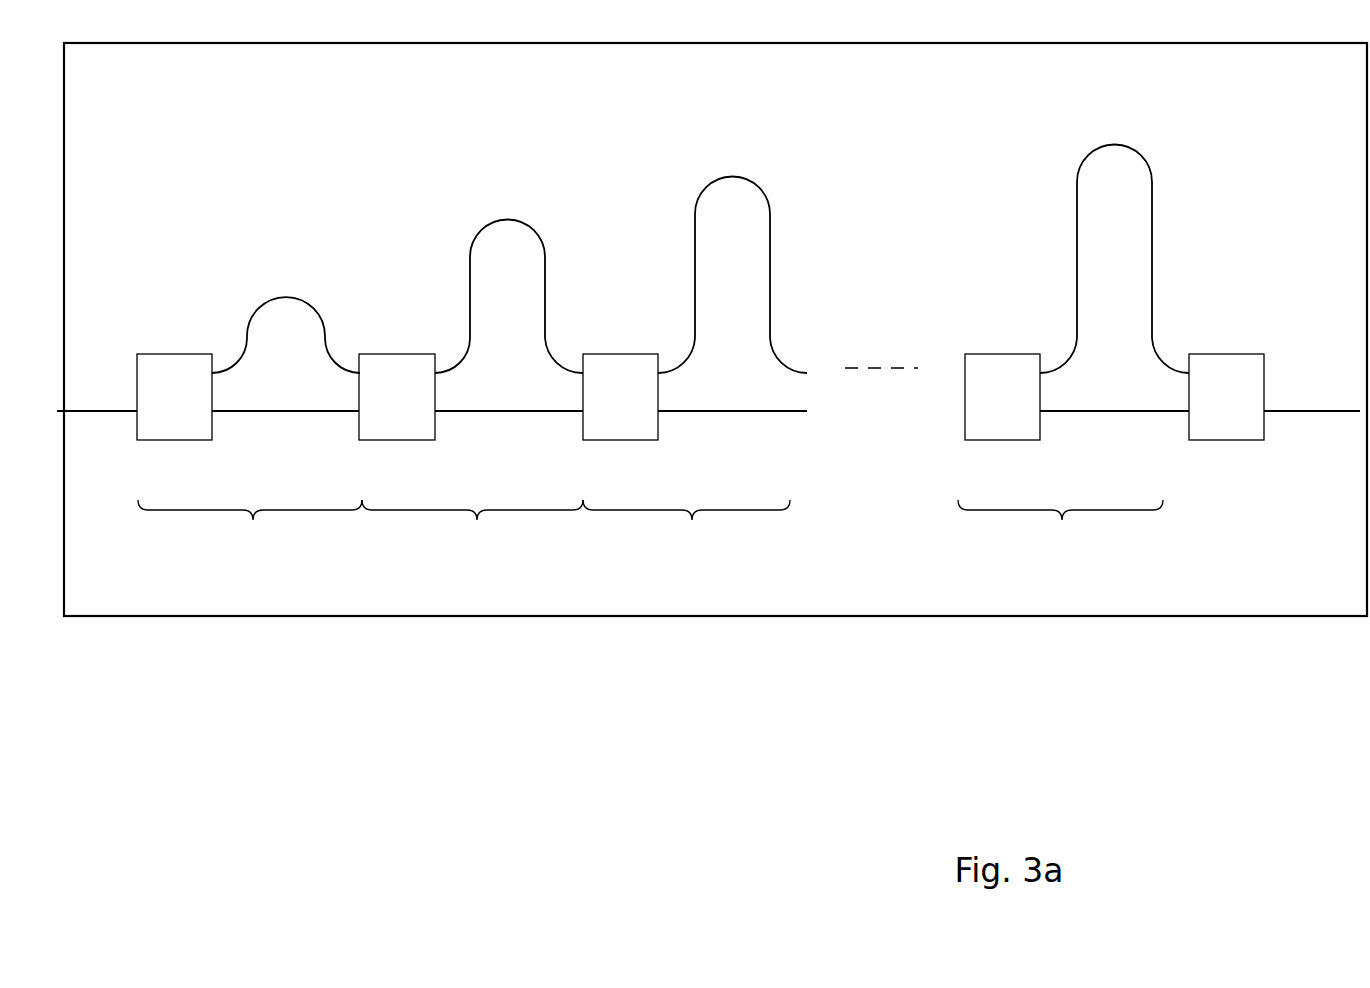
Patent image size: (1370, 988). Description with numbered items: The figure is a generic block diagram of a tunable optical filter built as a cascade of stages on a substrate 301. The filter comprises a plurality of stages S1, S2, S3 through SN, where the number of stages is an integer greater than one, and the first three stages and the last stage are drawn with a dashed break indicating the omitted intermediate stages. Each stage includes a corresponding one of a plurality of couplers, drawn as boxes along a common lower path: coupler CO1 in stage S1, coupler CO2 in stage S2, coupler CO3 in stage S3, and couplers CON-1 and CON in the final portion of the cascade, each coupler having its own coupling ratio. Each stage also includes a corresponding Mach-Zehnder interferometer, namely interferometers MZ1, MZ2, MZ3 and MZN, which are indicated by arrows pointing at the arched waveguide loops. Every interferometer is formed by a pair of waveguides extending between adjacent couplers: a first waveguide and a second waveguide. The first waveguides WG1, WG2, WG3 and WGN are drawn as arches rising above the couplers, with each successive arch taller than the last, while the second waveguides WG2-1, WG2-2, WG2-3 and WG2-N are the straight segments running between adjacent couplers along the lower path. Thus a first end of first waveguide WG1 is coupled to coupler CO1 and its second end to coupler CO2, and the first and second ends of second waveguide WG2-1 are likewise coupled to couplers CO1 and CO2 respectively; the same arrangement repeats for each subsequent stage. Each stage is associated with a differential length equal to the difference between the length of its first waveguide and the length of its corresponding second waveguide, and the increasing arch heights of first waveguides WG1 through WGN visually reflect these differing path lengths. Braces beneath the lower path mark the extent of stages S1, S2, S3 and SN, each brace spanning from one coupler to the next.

The substrate 301 is at (1220, 616).
The first coupler CO1 is at (173, 354).
The second coupler CO2 is at (397, 354).
The third coupler CO3 is at (619, 354).
The (N-1)th coupler CON-1 is at (990, 354).
The Nth coupler CON is at (1227, 354).
The first waveguide of first stage WG1 is at (247, 335).
The first waveguide of second stage WG2 is at (508, 220).
The first waveguide of third stage WG3 is at (768, 225).
The first waveguide of Nth stage WGN is at (1087, 157).
The second waveguide of first stage WG2-1 is at (252, 413).
The second waveguide of second stage WG2-2 is at (475, 413).
The second waveguide of third stage WG2-3 is at (700, 413).
The second waveguide of Nth stage WG2-N is at (1070, 413).
The first Mach-Zehnder interferometer MZ1 is at (292, 245).
The second Mach-Zehnder interferometer MZ2 is at (512, 148).
The third Mach-Zehnder interferometer MZ3 is at (755, 148).
The Nth Mach-Zehnder interferometer MZN is at (1193, 186).
The first stage S1 is at (250, 526).
The second stage S2 is at (472, 533).
The third stage S3 is at (686, 528).
The Nth stage SN is at (1060, 528).